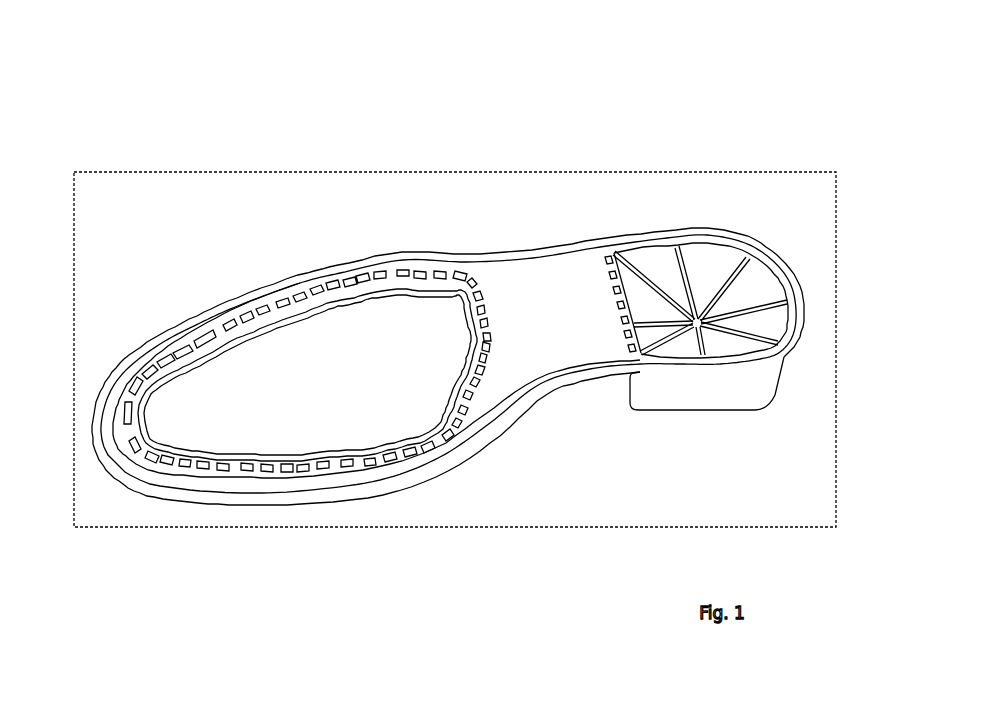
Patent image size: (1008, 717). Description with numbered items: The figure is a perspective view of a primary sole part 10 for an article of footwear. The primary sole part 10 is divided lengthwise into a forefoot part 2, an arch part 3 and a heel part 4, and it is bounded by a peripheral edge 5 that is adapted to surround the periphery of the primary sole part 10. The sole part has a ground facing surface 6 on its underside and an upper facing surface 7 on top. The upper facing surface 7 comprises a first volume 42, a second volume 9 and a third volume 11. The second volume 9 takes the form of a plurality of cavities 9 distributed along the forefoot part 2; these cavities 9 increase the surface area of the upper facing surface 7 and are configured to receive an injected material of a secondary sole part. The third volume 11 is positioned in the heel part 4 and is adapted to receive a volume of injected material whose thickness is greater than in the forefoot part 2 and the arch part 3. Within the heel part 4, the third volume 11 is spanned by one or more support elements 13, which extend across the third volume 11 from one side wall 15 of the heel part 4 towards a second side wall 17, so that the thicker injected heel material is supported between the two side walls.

The forefoot part 2 is at (182, 292).
The arch part 3 is at (447, 217).
The heel part 4 is at (718, 215).
The peripheral edge 5 is at (198, 495).
The ground facing surface 6 is at (347, 503).
The upper facing surface 7 is at (303, 333).
The second volume 9 is at (210, 327).
The primary sole part 10 is at (558, 138).
The third volume 11 is at (720, 342).
The support elements 13 is at (668, 352).
The side wall 15 is at (663, 250).
The second side wall 17 is at (785, 318).
The first volume 42 is at (373, 353).